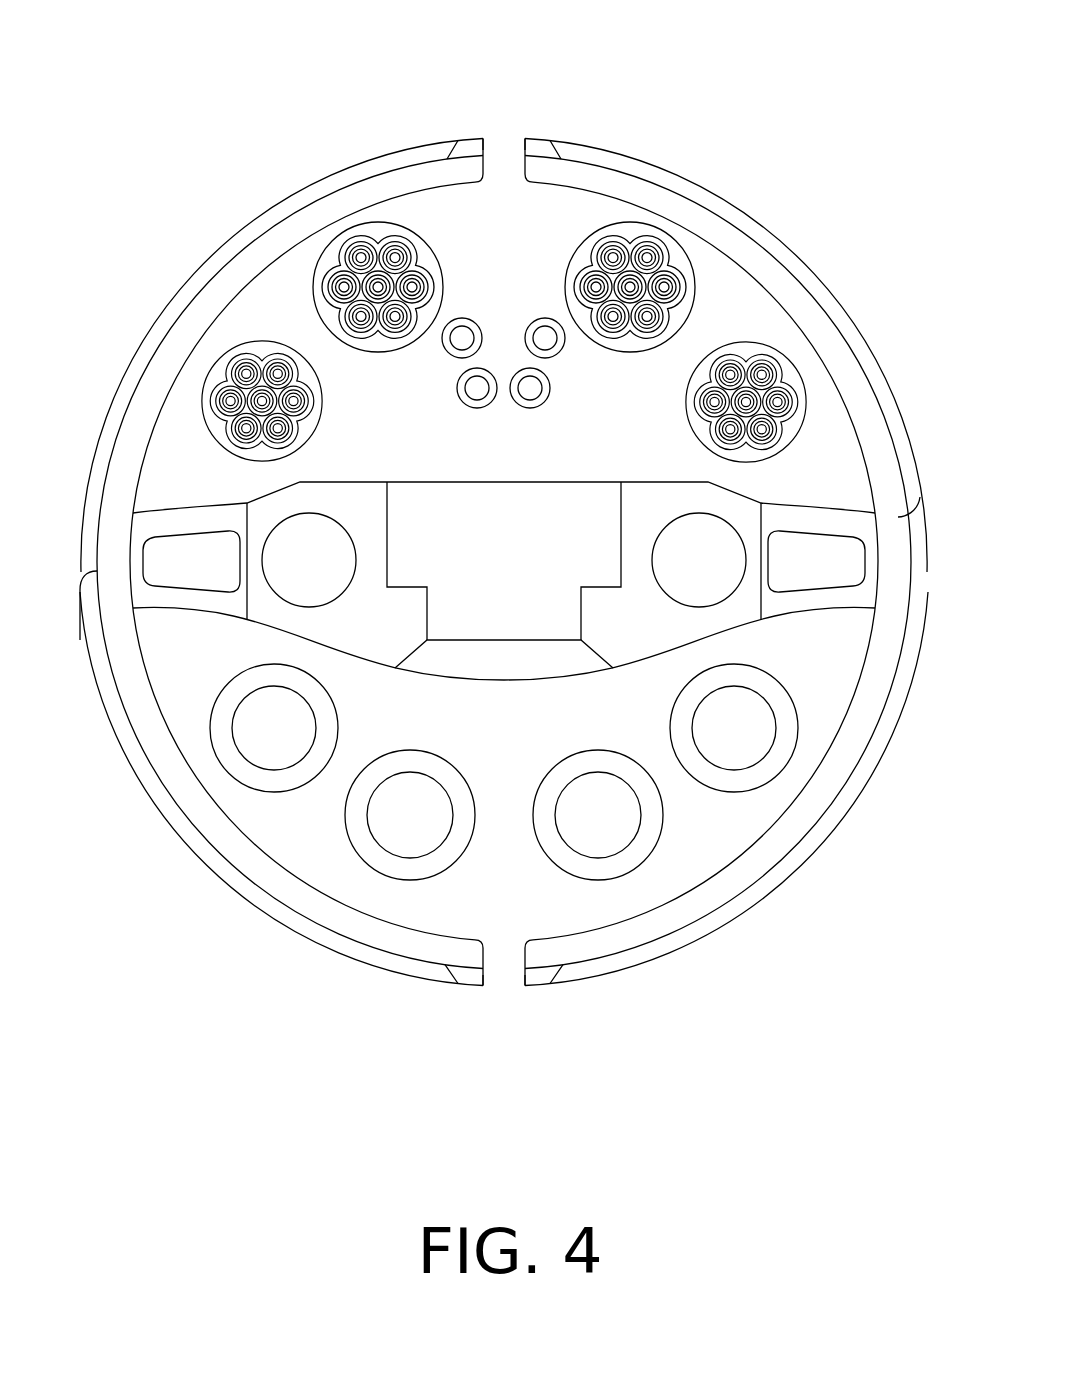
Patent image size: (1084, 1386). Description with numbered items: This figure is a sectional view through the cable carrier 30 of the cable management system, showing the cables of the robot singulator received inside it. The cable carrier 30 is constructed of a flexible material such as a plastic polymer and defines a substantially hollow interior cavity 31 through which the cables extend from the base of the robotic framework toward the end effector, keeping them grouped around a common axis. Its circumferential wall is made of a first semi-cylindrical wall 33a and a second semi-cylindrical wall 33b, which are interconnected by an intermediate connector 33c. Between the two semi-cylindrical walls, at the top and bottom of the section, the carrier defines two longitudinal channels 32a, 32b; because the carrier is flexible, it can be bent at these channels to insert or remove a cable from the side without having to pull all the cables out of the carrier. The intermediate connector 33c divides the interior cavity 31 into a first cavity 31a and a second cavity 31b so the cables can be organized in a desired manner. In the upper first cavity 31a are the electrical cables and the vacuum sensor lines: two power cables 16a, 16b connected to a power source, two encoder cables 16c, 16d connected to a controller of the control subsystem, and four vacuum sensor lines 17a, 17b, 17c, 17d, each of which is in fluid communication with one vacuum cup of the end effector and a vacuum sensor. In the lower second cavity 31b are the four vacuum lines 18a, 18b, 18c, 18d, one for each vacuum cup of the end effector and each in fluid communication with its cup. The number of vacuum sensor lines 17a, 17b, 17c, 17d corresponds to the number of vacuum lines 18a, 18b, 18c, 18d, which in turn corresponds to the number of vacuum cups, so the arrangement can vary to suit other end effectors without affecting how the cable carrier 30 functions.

The cable carrier 30 is at (238, 232).
The interior cavity 31 is at (764, 291).
The first cavity 31a is at (173, 475).
The second cavity 31b is at (573, 907).
The longitudinal channel 32a is at (505, 138).
The longitudinal channel 32b is at (508, 1000).
The first semi-cylindrical wall 33a is at (80, 640).
The second semi-cylindrical wall 33b is at (920, 497).
The intermediate connector 33c is at (150, 797).
The power cable 16a is at (378, 222).
The power cable 16b is at (629, 222).
The encoder cable 16c is at (203, 386).
The encoder cable 16d is at (806, 402).
The vacuum sensor line 17a is at (456, 319).
The vacuum sensor line 17b is at (458, 382).
The vacuum sensor line 17c is at (546, 403).
The vacuum sensor line 17d is at (545, 318).
The vacuum line 18a is at (275, 792).
The vacuum line 18b is at (415, 880).
The vacuum line 18c is at (662, 817).
The vacuum line 18d is at (797, 725).